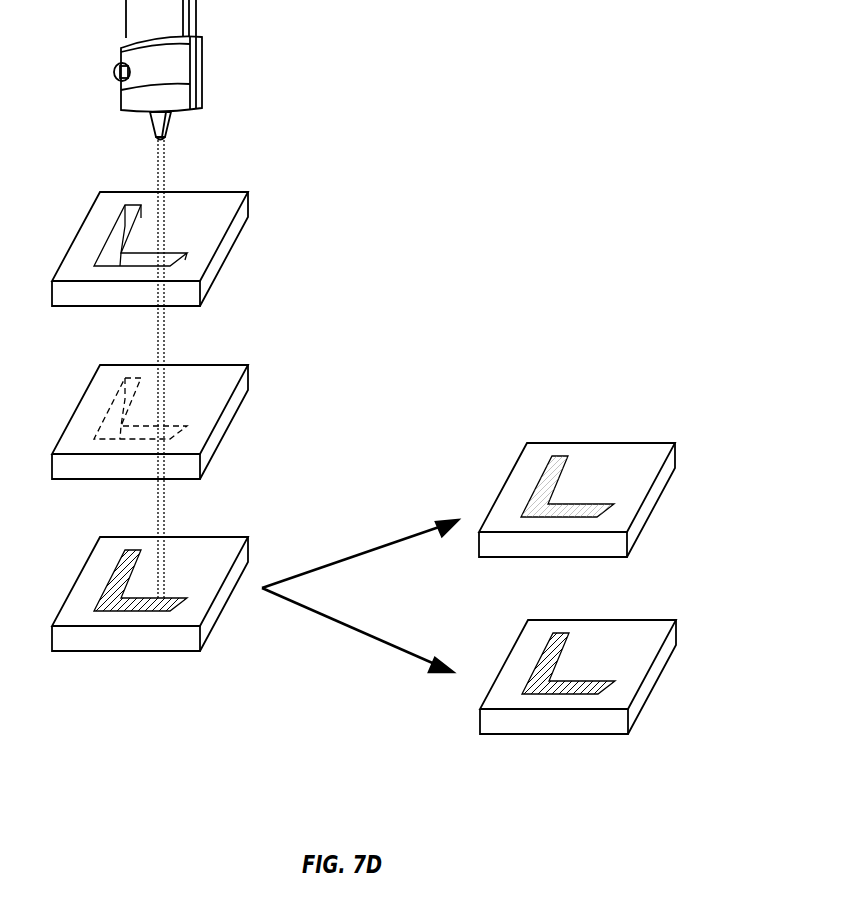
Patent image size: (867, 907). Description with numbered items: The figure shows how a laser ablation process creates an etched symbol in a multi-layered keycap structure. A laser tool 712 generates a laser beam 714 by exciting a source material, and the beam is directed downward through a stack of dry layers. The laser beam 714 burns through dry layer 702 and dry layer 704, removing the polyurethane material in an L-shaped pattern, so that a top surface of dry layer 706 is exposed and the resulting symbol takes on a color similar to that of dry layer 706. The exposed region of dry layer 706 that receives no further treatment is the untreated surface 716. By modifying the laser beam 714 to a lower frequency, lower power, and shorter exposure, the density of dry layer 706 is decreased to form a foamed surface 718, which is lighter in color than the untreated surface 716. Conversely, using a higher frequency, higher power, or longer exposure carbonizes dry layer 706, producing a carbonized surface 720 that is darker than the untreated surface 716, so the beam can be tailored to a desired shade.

The dry layer 702 is at (249, 196).
The dry layer 704 is at (249, 369).
The dry layer 706 is at (249, 549).
The laser tool 712 is at (204, 67).
The laser beam 714 is at (165, 163).
The untreated surface 716 is at (110, 603).
The foamed surface 718 is at (560, 465).
The carbonized surface 720 is at (570, 688).